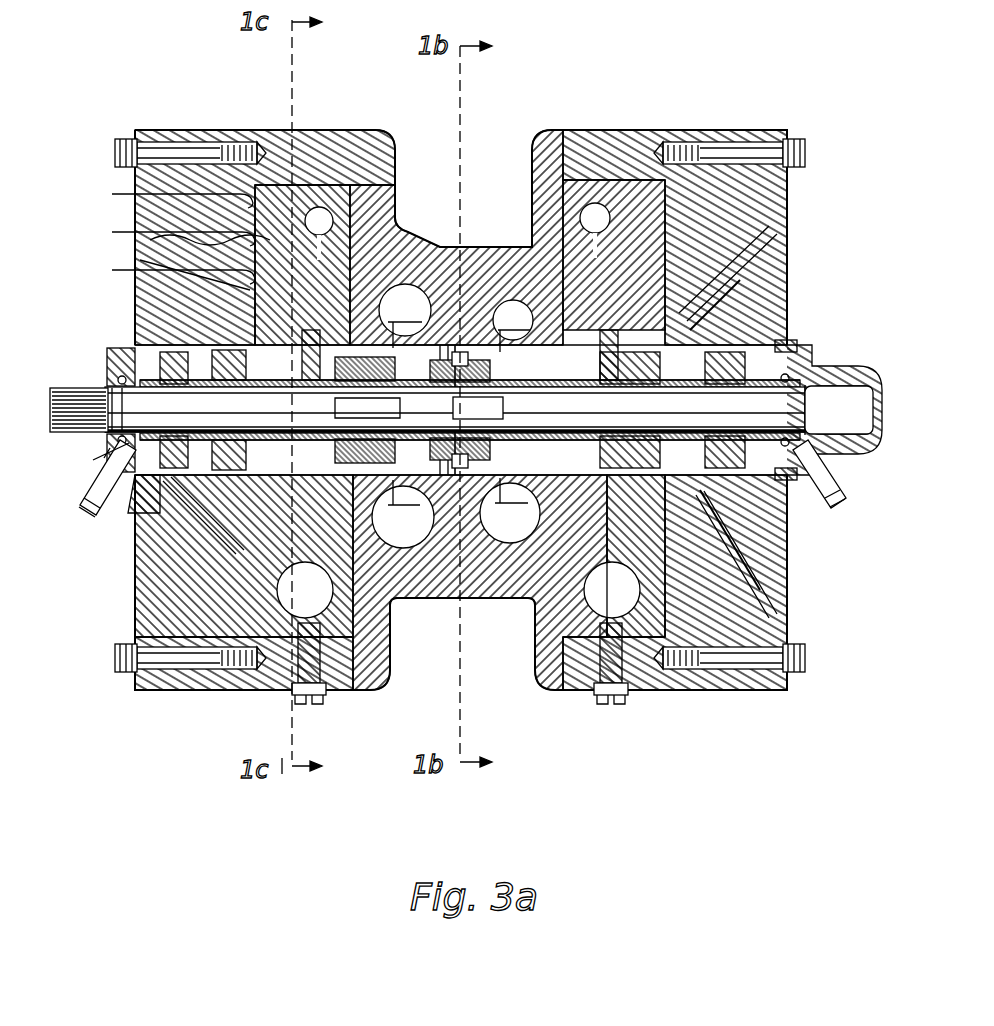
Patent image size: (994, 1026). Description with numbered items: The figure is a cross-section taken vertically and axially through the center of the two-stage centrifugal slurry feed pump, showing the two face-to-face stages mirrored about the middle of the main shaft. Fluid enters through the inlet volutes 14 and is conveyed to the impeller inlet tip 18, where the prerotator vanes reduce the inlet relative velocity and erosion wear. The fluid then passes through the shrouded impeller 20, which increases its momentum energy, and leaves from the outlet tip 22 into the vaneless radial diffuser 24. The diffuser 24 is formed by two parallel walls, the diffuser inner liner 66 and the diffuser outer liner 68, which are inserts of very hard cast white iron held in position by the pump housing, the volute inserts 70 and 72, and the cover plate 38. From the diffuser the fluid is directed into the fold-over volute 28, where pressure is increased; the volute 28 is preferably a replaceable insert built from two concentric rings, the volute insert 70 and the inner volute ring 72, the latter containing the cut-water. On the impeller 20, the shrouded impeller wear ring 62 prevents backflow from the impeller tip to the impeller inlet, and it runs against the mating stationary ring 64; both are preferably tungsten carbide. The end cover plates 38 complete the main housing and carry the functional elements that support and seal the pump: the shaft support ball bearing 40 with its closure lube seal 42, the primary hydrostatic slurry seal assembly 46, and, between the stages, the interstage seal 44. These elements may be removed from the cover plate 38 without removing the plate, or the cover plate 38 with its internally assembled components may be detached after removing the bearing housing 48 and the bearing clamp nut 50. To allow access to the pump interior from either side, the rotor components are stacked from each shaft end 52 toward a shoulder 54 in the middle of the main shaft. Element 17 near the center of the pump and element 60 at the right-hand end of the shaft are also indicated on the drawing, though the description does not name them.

The inlet volute 14 is at (456, 416).
The center partition 17 is at (466, 520).
The impeller inlet tip 18 is at (470, 300).
The impeller 20 is at (258, 296).
The outlet tip 22 is at (378, 275).
The vaneless radial diffuser 24 is at (348, 190).
The fold-over volute 28 is at (328, 185).
The end cover plate 38 is at (140, 618).
The shaft support ball bearing 40 is at (130, 497).
The closure lube seal 42 is at (128, 438).
The interstage seal 44 is at (443, 345).
The primary hydrostatic slurry seal assembly 46 is at (735, 300).
The bearing housing 48 is at (882, 380).
The bearing clamp nut 50 is at (832, 470).
The shaft end 52 is at (872, 414).
The shoulder 54 is at (452, 405).
The bearing retainer 60 is at (805, 352).
The impeller wear ring 62 is at (720, 262).
The stationary ring 64 is at (700, 562).
The diffuser inner liner 66 is at (168, 233).
The diffuser outer liner 68 is at (168, 271).
The volute insert 70 is at (285, 135).
The inner volute ring 72 is at (622, 150).